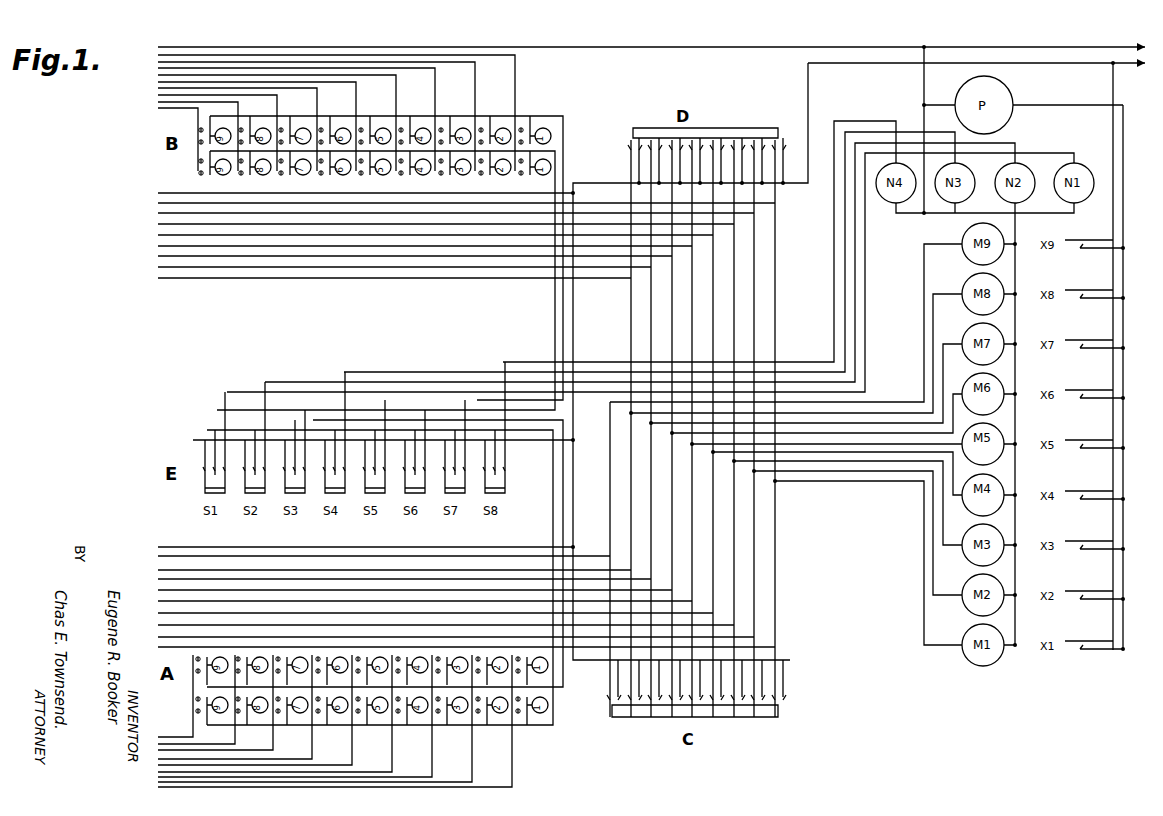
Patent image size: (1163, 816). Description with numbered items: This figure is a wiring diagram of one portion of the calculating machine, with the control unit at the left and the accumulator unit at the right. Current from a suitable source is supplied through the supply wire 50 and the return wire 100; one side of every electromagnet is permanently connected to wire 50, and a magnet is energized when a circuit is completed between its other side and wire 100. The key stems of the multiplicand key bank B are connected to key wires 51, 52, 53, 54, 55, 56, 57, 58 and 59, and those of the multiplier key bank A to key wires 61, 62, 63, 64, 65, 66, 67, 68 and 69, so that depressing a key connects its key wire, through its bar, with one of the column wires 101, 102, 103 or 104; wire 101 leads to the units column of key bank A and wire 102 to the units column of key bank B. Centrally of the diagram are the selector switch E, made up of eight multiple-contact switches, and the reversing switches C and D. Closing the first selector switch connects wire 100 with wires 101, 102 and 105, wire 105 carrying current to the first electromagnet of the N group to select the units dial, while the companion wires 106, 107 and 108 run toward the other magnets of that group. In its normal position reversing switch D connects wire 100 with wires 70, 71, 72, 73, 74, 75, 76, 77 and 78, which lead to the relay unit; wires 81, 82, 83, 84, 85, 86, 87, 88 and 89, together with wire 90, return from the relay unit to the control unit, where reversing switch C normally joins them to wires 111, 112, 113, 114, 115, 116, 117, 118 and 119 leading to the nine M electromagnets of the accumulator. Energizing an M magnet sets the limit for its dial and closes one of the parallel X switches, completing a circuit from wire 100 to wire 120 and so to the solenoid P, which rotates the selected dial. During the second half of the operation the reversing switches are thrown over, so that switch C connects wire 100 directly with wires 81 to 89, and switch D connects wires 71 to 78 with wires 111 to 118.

The wire 50 is at (1124, 45).
The key wire 51 is at (515, 88).
The key wire 52 is at (475, 90).
The key wire 53 is at (435, 92).
The key wire 54 is at (396, 94).
The key wire 55 is at (356, 95).
The key wire 56 is at (317, 101).
The key wire 57 is at (277, 104).
The key wire 58 is at (238, 106).
The key wire 59 is at (188, 111).
The key wire 61 is at (512, 757).
The key wire 62 is at (472, 757).
The key wire 63 is at (432, 752).
The key wire 64 is at (392, 748).
The key wire 65 is at (352, 746).
The key wire 66 is at (312, 740).
The key wire 67 is at (273, 738).
The key wire 68 is at (235, 737).
The key wire 69 is at (193, 724).
The wire 70 is at (158, 193).
The wire 71 is at (158, 203).
The wire 72 is at (158, 213).
The wire 73 is at (158, 224).
The wire 74 is at (158, 233).
The wire 75 is at (158, 244).
The wire 76 is at (158, 255).
The wire 77 is at (179, 267).
The wire 78 is at (200, 278).
The wire 81 is at (158, 648).
The wire 82 is at (358, 637).
The wire 83 is at (158, 626).
The wire 84 is at (320, 613).
The wire 85 is at (158, 602).
The wire 86 is at (280, 590).
The wire 87 is at (158, 580).
The wire 88 is at (233, 570).
The wire 89 is at (158, 557).
The conductor 90 is at (183, 547).
The wire 100 is at (814, 63).
The wire 101 is at (207, 430).
The wire 102 is at (217, 410).
The wire 103 is at (313, 420).
The wire 104 is at (565, 128).
The wire 105 is at (242, 383).
The conductor 106 is at (361, 382).
The conductor 107 is at (410, 372).
The conductor 108 is at (513, 362).
The wire 111 is at (775, 559).
The wire 112 is at (754, 549).
The wire 113 is at (734, 536).
The wire 114 is at (713, 524).
The wire 115 is at (692, 510).
The wire 116 is at (672, 516).
The wire 117 is at (651, 506).
The wire 118 is at (631, 494).
The wire 119 is at (610, 485).
The wire 120 is at (1130, 635).